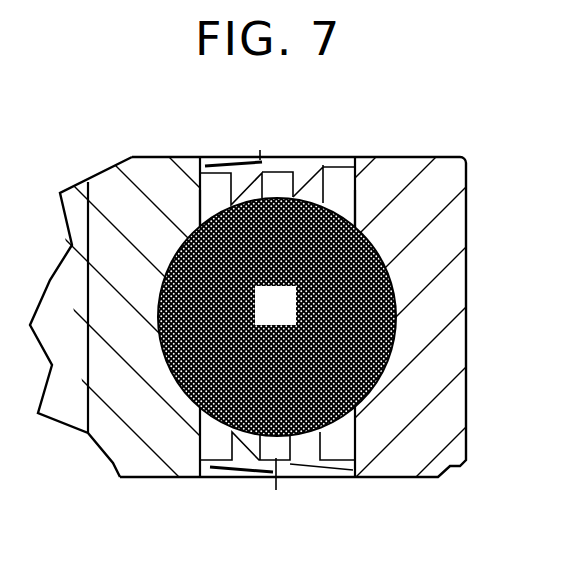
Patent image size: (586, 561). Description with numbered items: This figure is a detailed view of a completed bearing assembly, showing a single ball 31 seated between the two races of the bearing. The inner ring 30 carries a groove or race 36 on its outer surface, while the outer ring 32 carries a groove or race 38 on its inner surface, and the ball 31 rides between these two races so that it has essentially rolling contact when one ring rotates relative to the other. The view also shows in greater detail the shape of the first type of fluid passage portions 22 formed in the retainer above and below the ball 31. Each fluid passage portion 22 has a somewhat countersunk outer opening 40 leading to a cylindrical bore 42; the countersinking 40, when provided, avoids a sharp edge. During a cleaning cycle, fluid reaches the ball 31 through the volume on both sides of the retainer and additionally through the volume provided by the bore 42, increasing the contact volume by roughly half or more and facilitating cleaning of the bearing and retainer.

The fluid passage portions 22 is at (300, 158).
The inner ring 30 is at (108, 170).
The ball 31 is at (292, 320).
The outer ring 32 is at (450, 310).
The race 36 is at (200, 230).
The race 38 is at (362, 244).
The countersunk outer opening 40 is at (259, 158).
The cylindrical bore 42 is at (331, 163).